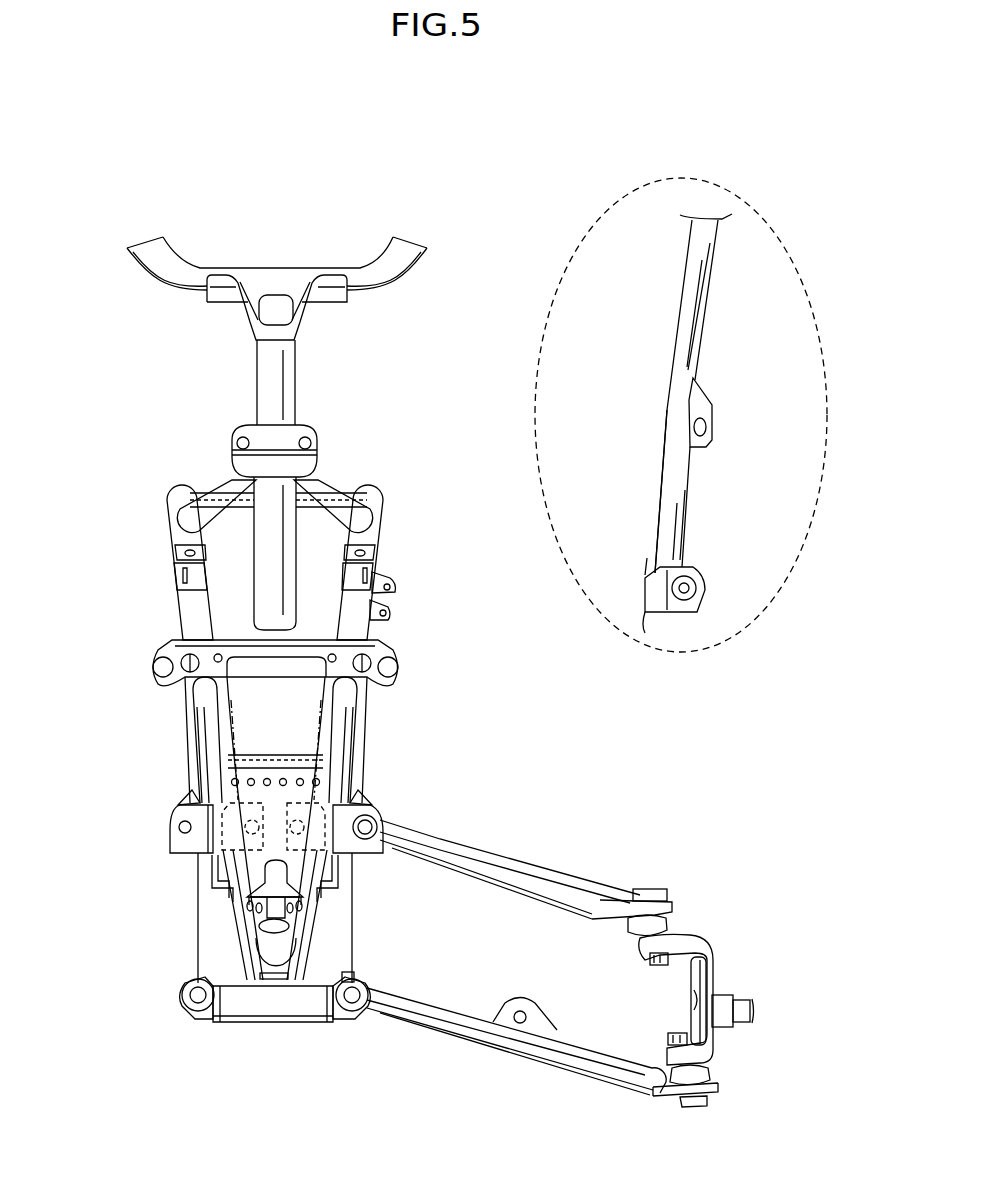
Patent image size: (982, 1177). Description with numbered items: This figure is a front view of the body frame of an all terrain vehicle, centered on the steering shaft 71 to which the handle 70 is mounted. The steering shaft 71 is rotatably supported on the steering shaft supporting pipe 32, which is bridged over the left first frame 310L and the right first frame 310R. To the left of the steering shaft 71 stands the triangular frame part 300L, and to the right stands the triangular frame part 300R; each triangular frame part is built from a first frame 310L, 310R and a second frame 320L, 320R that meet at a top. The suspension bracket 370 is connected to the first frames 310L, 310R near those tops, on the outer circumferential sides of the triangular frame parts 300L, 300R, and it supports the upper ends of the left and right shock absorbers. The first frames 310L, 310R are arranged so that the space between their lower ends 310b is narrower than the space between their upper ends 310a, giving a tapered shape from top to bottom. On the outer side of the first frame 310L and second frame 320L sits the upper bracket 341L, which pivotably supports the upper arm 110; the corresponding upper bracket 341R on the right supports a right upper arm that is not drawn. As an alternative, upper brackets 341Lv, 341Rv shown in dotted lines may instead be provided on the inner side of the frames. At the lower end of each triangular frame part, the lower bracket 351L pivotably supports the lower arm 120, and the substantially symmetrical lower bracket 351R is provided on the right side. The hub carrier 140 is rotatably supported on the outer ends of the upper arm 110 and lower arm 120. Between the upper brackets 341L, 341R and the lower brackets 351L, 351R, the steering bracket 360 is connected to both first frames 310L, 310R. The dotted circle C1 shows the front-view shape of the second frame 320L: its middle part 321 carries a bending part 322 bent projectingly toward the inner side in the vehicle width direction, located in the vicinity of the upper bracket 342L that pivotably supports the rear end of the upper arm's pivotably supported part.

The handle 70 is at (386, 270).
The steering shaft 71 is at (286, 367).
The steering shaft supporting pipe 32 is at (322, 497).
The triangular frame part 300R is at (160, 487).
The triangular frame part 300L is at (394, 487).
The suspension bracket 370 is at (276, 655).
The upper end 310a is at (396, 666).
The first frame 310R is at (186, 712).
The first frame 310L is at (346, 712).
The second frame 320R is at (207, 930).
The second frame 320L is at (343, 928).
The upper bracket 341R is at (188, 848).
The upper bracket 341L is at (362, 848).
The upper bracket 341Rv is at (230, 795).
The upper bracket 341Lv is at (320, 795).
The steering bracket 360 is at (253, 917).
The lower end 310b is at (322, 960).
The lower bracket 351R is at (198, 1014).
The lower bracket 351L is at (352, 1014).
The upper arm 110 is at (530, 880).
The lower arm 120 is at (498, 1043).
The hub carrier 140 is at (722, 936).
The dotted circle C1 is at (687, 178).
The upper bracket 342L is at (705, 398).
The bending part 322 is at (660, 412).
The middle part 321 is at (684, 470).